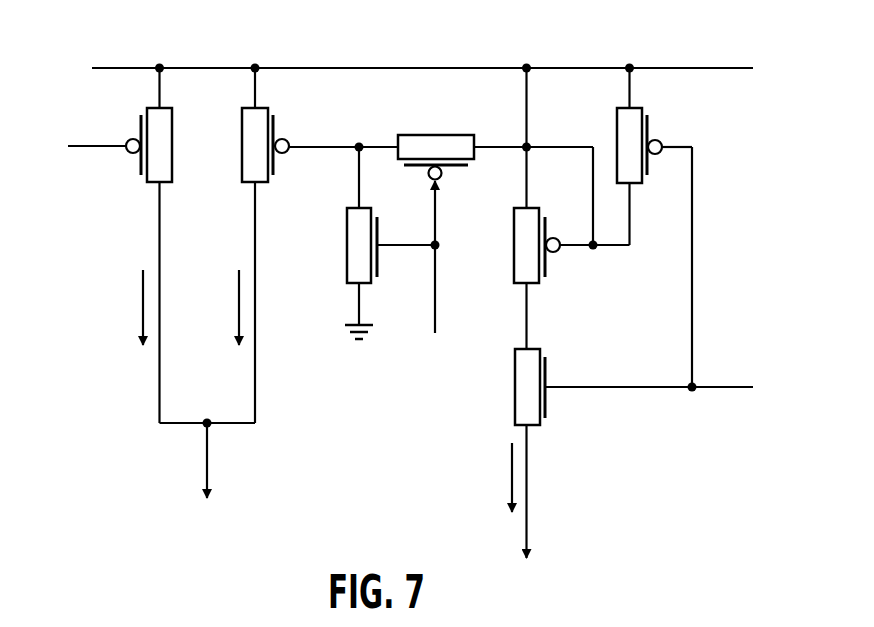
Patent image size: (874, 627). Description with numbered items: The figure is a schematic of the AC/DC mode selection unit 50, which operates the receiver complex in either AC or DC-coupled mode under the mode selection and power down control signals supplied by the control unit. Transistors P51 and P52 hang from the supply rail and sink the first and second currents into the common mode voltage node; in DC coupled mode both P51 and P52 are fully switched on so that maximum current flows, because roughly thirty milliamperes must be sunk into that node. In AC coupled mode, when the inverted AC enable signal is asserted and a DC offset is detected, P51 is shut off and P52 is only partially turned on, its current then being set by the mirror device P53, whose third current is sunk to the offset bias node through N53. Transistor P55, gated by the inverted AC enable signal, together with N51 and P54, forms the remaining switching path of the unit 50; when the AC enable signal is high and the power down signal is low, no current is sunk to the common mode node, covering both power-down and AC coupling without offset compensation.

The AC/DC mode selection unit 50 is at (416, 314).
The transistor P51 is at (168, 133).
The transistor P52 is at (262, 133).
The mirror device P53 is at (522, 250).
The transistor P54 is at (632, 117).
The transistor P55 is at (460, 143).
The transistor N51 is at (355, 250).
The transistor N53 is at (522, 390).